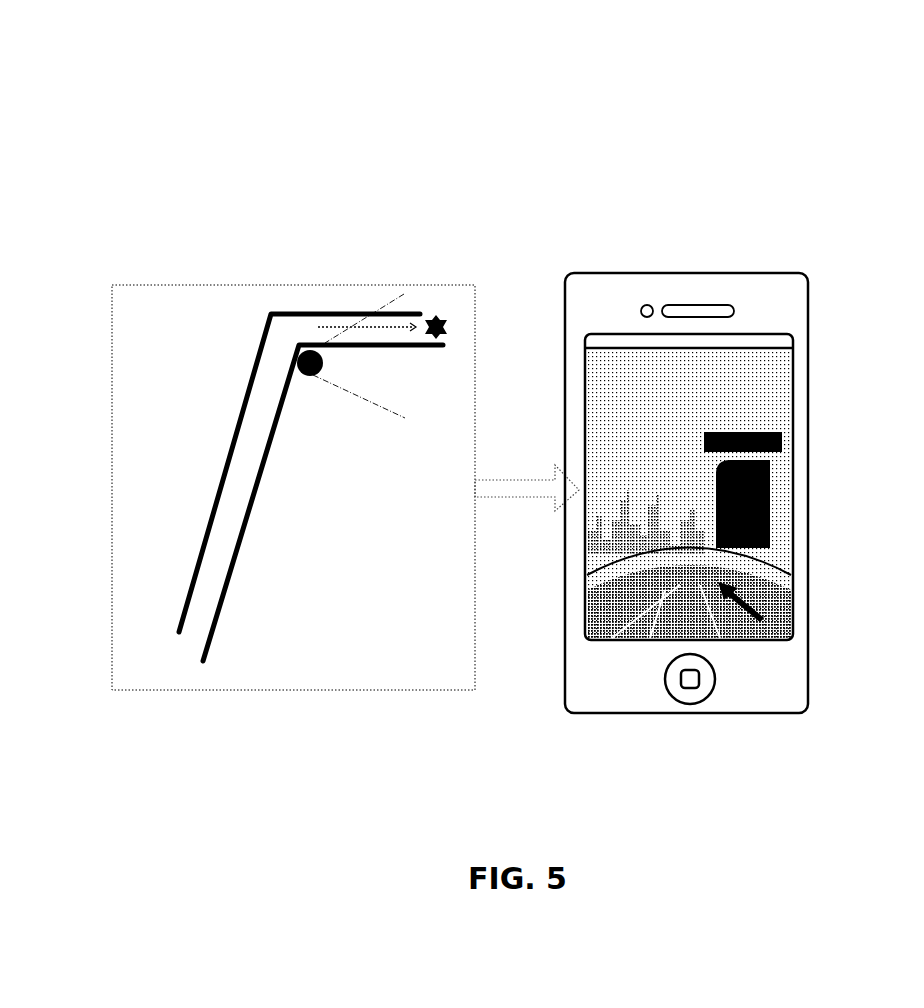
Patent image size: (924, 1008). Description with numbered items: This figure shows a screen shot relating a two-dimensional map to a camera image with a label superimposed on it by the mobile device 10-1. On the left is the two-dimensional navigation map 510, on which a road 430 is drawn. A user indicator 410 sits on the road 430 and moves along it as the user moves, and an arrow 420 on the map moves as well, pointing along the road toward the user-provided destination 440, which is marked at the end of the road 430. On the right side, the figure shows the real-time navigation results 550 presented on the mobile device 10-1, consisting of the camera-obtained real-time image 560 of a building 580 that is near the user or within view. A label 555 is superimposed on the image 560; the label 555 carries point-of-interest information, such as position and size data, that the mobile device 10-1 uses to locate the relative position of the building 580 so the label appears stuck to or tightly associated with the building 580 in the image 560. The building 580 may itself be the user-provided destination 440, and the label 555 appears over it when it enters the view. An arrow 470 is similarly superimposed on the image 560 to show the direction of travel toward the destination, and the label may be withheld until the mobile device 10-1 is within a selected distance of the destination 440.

The mobile device 10-1 is at (720, 212).
The two-dimensional navigation map 510 is at (293, 487).
The road 430 is at (225, 425).
The user indicator 410 is at (310, 388).
The arrow 420 is at (404, 328).
The user-provided destination 440 is at (436, 302).
The real-time navigation results 550 is at (734, 527).
The image 560 is at (752, 380).
The label 555 is at (782, 441).
The building 580 is at (773, 496).
The arrow 470 is at (750, 610).